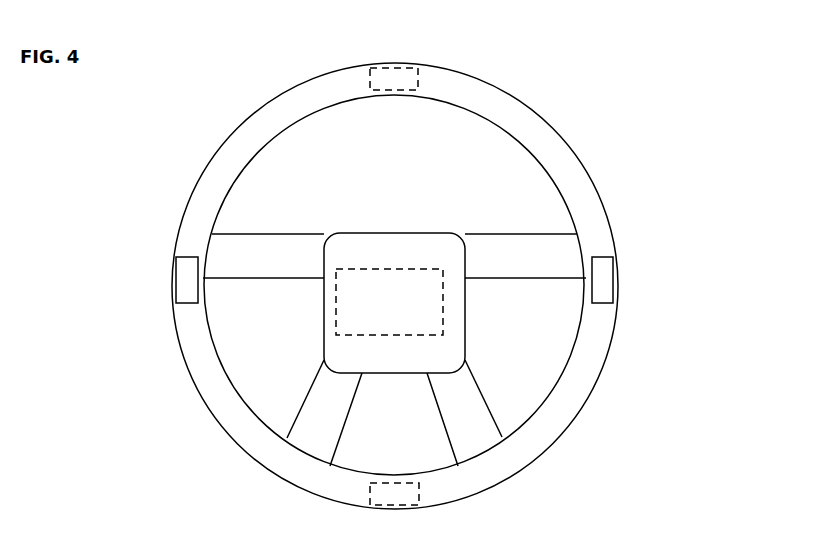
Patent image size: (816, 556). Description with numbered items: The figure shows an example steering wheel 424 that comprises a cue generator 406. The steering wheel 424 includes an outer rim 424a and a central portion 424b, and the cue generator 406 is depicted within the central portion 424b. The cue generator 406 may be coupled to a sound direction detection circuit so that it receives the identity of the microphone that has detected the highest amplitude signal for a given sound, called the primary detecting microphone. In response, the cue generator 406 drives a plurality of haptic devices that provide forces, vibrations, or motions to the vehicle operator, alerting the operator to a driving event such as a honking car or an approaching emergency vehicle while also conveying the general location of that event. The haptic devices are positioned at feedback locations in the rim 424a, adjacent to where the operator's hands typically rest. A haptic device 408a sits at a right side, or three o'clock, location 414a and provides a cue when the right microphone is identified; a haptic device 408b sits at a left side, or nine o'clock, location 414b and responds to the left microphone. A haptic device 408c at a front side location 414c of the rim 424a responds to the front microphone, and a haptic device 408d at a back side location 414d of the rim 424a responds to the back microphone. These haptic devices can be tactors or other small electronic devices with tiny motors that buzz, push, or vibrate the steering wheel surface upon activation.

The cue generator 406 is at (443, 312).
The haptic device 408a is at (601, 303).
The haptic device 408b is at (188, 303).
The haptic device 408c is at (418, 70).
The haptic device 408d is at (420, 483).
The right side location 414a is at (621, 278).
The left side location 414b is at (173, 279).
The front side location 414c is at (393, 60).
The back side location 414d is at (396, 513).
The steering wheel 424 is at (209, 138).
The rim 424a is at (594, 178).
The central portion 424b is at (398, 230).